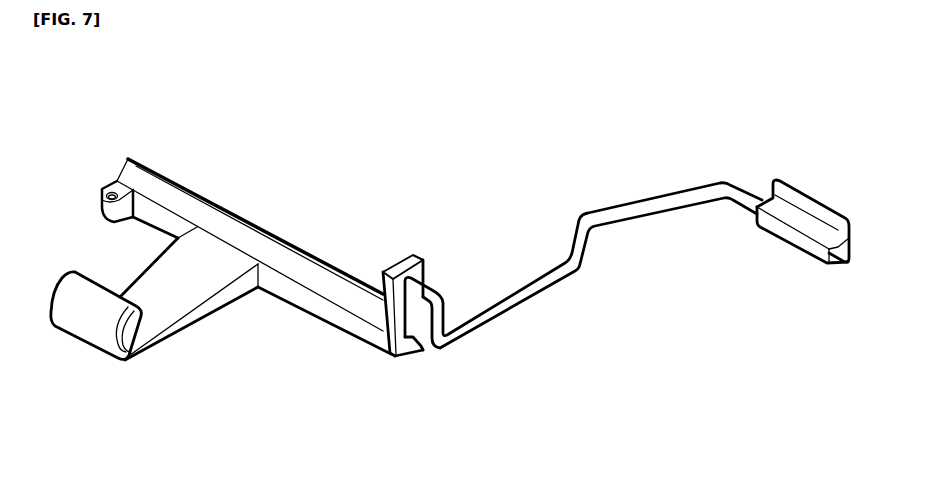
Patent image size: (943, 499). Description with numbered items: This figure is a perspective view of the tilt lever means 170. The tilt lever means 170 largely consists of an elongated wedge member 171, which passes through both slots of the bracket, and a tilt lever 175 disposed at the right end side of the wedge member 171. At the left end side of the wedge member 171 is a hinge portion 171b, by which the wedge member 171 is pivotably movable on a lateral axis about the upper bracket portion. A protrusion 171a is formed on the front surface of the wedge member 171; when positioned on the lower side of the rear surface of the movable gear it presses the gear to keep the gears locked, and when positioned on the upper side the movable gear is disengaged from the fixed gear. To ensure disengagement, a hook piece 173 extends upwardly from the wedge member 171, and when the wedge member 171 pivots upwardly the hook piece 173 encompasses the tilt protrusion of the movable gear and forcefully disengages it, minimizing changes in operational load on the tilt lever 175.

The tilt lever means 170 is at (432, 71).
The wedge member 171 is at (335, 320).
The protrusion 171a is at (147, 183).
The hinge portion 171b is at (101, 188).
The hook piece 173 is at (102, 328).
The tilt lever 175 is at (537, 287).